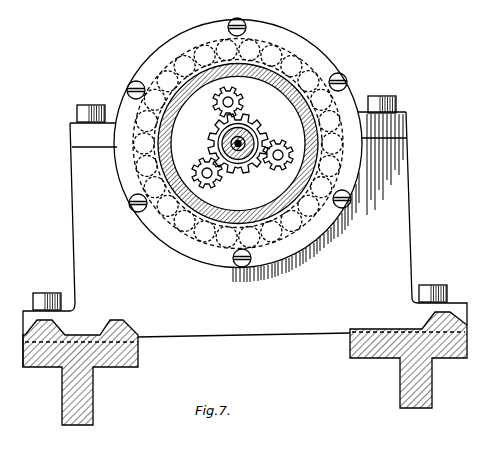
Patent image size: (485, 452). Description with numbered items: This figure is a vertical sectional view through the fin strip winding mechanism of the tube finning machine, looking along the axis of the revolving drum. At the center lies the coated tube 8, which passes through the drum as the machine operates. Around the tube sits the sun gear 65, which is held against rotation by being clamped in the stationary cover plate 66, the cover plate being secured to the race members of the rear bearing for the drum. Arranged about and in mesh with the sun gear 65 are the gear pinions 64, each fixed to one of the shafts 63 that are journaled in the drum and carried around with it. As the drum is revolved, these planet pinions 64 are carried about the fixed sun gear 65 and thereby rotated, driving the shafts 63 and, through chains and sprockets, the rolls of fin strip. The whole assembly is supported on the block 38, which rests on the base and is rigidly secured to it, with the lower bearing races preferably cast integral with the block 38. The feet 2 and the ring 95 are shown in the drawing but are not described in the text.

The base leg 2 is at (65, 413).
The coated tube 8 is at (245, 137).
The block 38 is at (80, 256).
The shafts 63 is at (218, 108).
The gear pinions 64 is at (233, 101).
The sun gear 65 is at (209, 133).
The stationary cover plate 66 is at (195, 208).
The ball bearing ring 95 is at (139, 179).